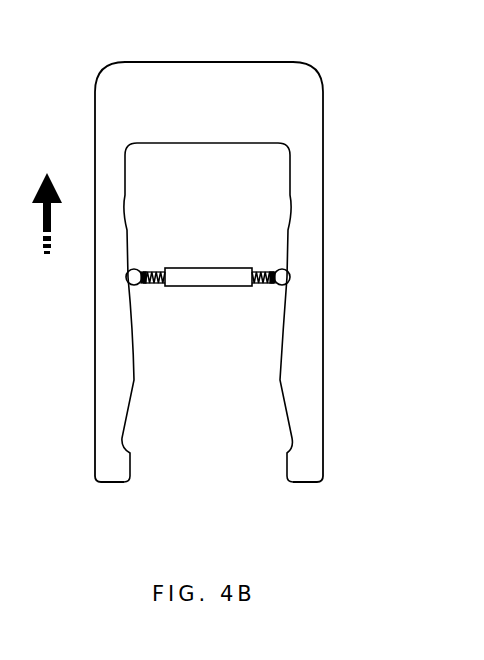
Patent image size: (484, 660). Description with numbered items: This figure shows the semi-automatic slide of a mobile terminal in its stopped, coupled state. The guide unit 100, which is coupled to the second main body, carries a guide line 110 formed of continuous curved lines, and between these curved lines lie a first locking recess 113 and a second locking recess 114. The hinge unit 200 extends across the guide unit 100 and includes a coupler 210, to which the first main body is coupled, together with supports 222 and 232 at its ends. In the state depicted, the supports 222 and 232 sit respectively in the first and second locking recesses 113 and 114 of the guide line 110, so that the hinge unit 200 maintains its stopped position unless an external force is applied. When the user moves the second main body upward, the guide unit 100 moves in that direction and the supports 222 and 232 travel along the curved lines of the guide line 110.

The guide unit 100 is at (254, 60).
The guide line 110 is at (136, 375).
The first locking recess 113 is at (128, 289).
The second locking recess 114 is at (287, 288).
The hinge unit 200 is at (206, 276).
The coupler 210 is at (220, 287).
The support 222 is at (126, 274).
The support 232 is at (316, 275).